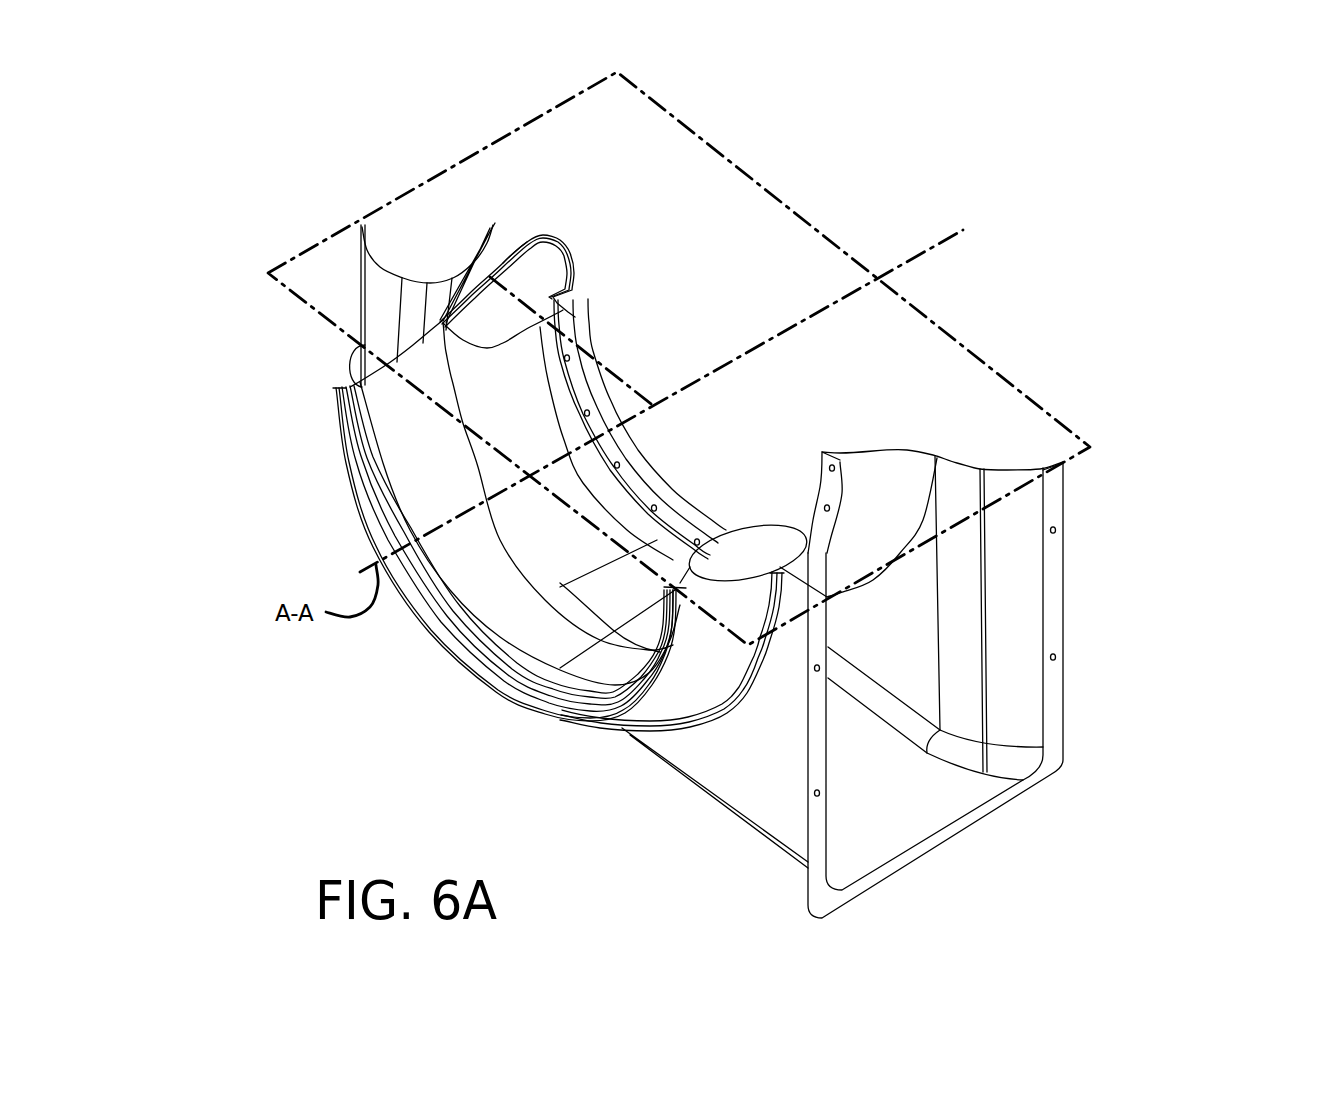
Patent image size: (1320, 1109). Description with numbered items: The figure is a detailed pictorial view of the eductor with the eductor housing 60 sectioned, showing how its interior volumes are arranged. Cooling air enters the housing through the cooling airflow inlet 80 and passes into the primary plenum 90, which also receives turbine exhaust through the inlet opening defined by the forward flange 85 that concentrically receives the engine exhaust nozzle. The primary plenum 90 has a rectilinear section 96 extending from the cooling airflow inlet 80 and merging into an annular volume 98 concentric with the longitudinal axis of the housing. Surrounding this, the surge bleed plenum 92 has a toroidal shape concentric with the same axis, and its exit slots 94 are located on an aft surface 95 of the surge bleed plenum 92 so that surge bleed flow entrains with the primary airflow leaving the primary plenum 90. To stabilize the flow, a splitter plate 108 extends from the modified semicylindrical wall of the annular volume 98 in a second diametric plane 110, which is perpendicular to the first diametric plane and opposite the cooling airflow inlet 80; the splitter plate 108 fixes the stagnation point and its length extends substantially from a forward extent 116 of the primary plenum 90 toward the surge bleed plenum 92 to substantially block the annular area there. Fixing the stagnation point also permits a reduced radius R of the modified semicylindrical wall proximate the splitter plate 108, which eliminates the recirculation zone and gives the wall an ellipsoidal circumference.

The eductor housing 60 is at (1095, 372).
The cooling airflow inlet 80 is at (942, 820).
The forward flange 85 is at (683, 517).
The primary plenum 90 is at (582, 538).
The surge bleed plenum 92 is at (410, 455).
The exit slots 94 is at (460, 593).
The aft surface 95 is at (390, 480).
The rectilinear section 96 is at (900, 625).
The annular volume 98 is at (540, 437).
The splitter plate 108 is at (520, 277).
The second diametric plane 110 is at (1047, 415).
The forward extent 116 is at (563, 237).
The radius R is at (503, 290).